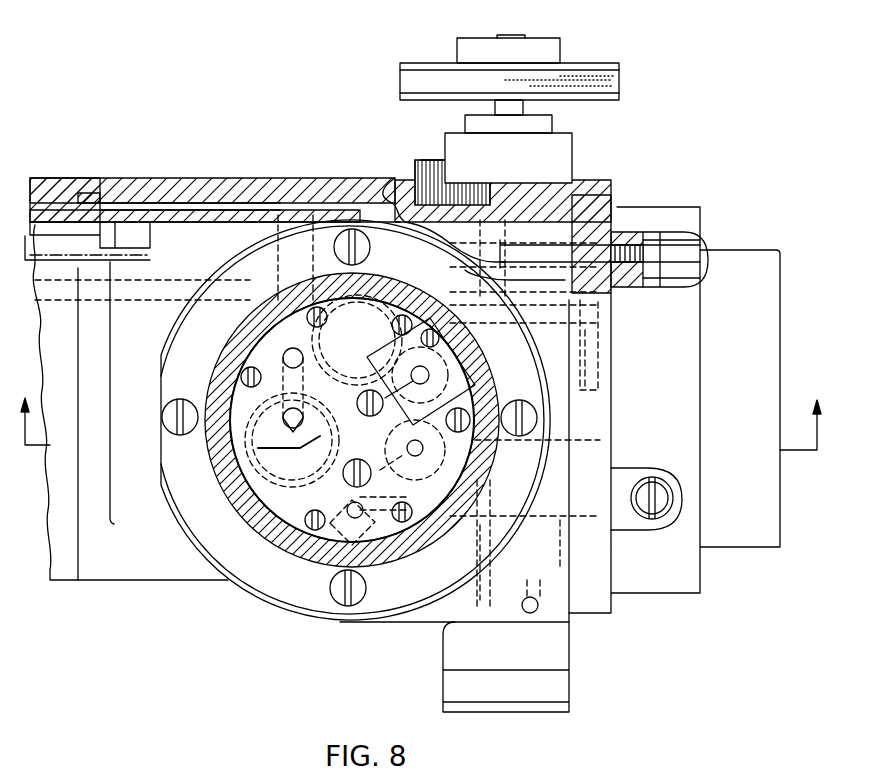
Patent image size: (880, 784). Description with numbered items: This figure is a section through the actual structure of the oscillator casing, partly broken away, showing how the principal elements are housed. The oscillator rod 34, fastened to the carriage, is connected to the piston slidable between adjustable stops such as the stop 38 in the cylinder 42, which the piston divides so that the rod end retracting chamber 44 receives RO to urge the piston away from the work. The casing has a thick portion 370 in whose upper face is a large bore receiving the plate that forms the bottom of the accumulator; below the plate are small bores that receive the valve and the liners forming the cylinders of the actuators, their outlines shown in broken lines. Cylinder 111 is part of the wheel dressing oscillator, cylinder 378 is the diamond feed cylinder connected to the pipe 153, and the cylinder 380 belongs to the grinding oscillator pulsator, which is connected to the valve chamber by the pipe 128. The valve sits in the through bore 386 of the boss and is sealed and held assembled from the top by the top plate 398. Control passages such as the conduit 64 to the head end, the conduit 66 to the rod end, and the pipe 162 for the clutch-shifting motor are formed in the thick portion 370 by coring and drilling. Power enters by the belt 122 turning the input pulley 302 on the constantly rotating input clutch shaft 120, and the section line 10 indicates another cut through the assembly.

The section line 10 is at (421, 407).
The oscillator rod 34 is at (62, 245).
The adjustable stop 38 is at (530, 258).
The cylinder 42 is at (262, 210).
The rod end retracting chamber 44 is at (126, 232).
The conduit 64 is at (478, 190).
The conduit 66 is at (300, 372).
The cylinder 111 is at (214, 482).
The input clutch shaft 120 is at (518, 108).
The belt 122 is at (619, 80).
The pipe 128 is at (418, 300).
The pipe 153 is at (606, 348).
The pipe 162 is at (548, 576).
The input pulley 302 is at (545, 46).
The thick portion of casing 370 is at (278, 532).
The diamond feed cylinder 378 is at (386, 486).
The cylinder of oscillator 380 is at (323, 391).
The through bore 386 is at (192, 205).
The top plate 398 is at (470, 350).